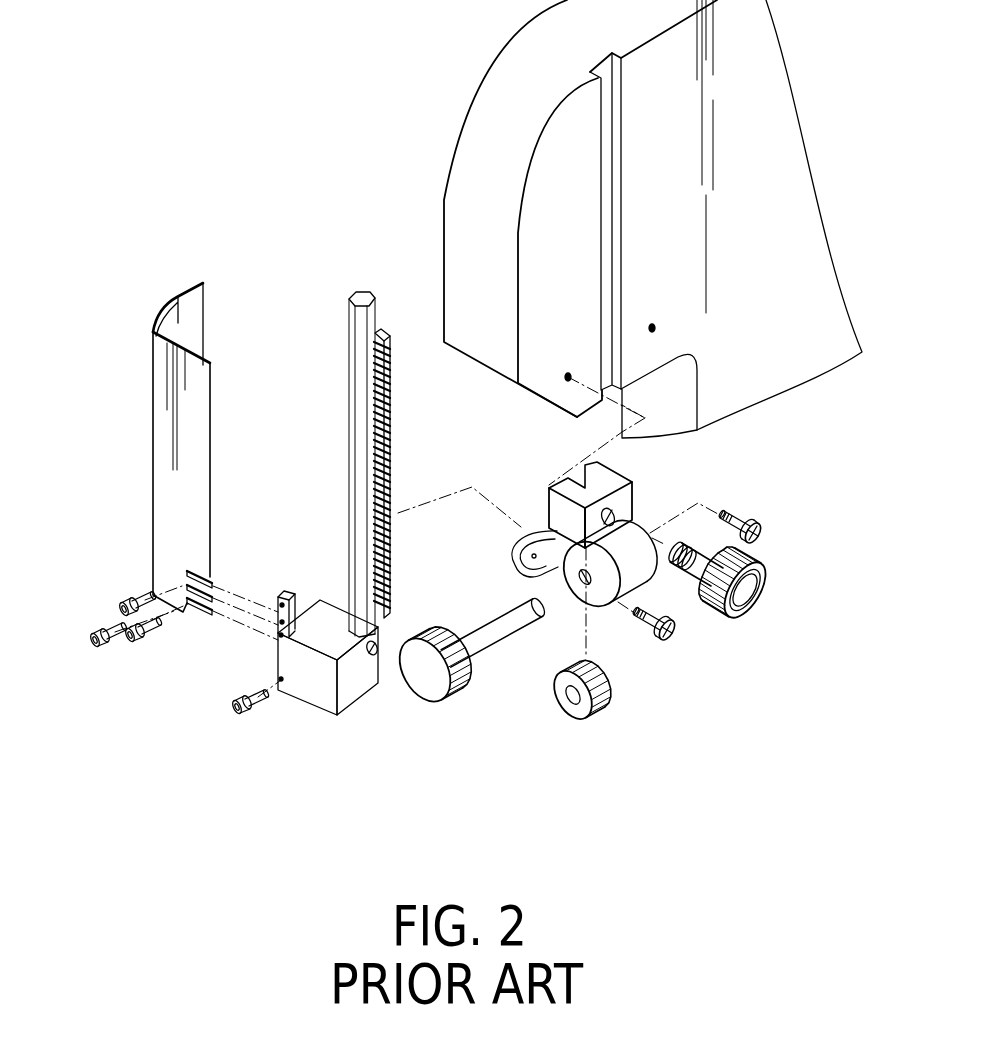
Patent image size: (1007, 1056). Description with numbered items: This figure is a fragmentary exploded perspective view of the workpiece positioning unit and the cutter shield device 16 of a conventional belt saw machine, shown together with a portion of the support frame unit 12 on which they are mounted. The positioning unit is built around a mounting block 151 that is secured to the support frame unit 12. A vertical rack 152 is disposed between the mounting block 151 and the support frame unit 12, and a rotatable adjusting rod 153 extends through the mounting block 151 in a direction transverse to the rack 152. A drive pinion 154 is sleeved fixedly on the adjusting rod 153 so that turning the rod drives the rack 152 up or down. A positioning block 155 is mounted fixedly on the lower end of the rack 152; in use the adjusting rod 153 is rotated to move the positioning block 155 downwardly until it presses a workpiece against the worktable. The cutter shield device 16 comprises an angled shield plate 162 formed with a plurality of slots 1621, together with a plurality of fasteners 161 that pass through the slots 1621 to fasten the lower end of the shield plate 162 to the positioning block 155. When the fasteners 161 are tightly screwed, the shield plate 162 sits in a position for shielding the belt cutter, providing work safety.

The support frame unit 12 is at (771, 35).
The cutter shield device 16 is at (125, 491).
The angled shield plate 162 is at (125, 516).
The slots 1621 is at (207, 604).
The fasteners 161 is at (110, 645).
The vertical rack 152 is at (392, 424).
The mounting block 151 is at (641, 485).
The rotatable adjusting rod 153 is at (512, 630).
The drive pinion 154 is at (583, 714).
The positioning block 155 is at (305, 688).